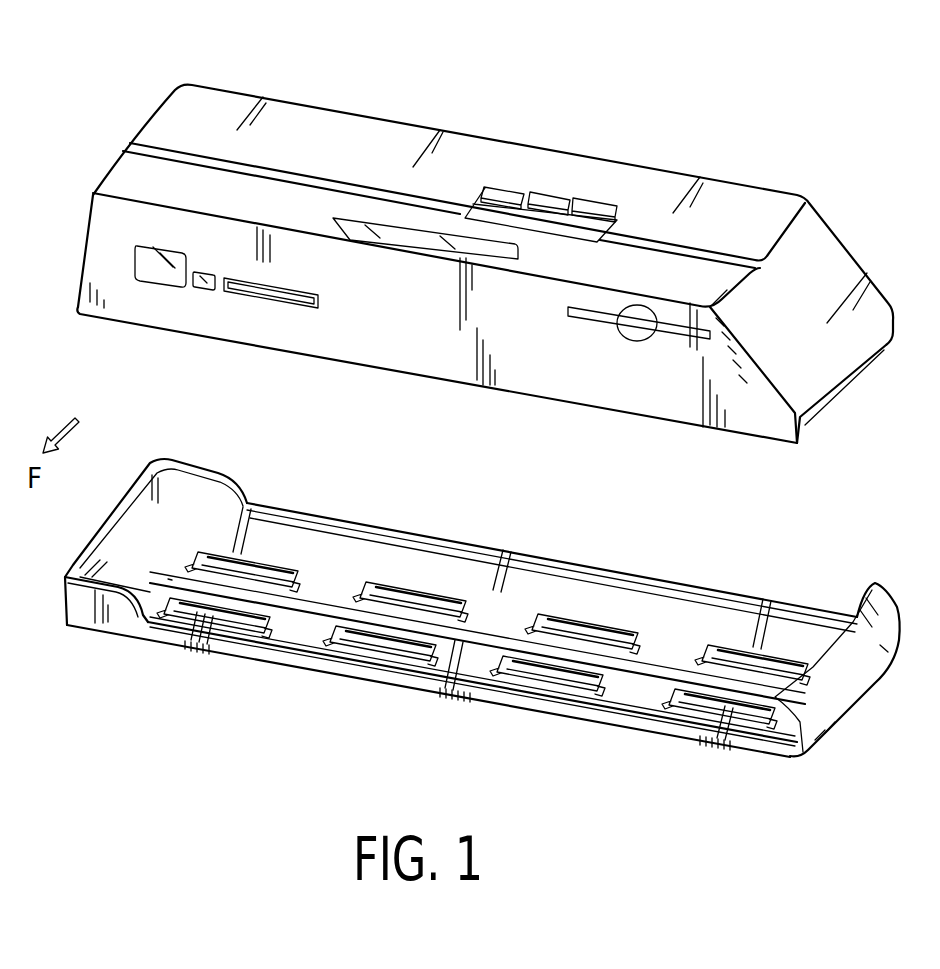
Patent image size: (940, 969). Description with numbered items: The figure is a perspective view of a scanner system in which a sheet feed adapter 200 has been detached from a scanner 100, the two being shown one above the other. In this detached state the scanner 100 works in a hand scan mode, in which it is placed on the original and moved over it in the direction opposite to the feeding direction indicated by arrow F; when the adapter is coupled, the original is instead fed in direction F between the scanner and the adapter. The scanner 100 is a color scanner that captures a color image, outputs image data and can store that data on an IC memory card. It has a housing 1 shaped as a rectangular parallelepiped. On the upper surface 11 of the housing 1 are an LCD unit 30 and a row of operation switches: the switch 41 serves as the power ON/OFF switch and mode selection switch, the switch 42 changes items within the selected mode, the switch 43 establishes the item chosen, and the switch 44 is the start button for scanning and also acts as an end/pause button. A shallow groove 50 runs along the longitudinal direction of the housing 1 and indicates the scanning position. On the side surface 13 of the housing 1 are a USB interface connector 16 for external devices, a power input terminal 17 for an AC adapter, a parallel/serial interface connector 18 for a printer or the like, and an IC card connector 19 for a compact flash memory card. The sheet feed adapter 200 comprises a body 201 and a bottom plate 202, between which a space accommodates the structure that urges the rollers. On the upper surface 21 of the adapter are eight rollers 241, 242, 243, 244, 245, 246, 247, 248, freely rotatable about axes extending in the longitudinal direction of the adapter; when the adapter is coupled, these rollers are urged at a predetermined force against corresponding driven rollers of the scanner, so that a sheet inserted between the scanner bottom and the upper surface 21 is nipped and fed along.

The housing 1 is at (276, 99).
The scanner 100 is at (459, 100).
The upper surface 11 is at (375, 133).
The side surface 13 is at (460, 363).
The USB interface connector 16 is at (150, 265).
The power input terminal 17 is at (198, 280).
The parallel/serial interface connector 18 is at (263, 295).
The IC card connector 19 is at (663, 334).
The LCD unit 30 is at (640, 232).
The switch 41 is at (603, 206).
The switch 42 is at (556, 197).
The switch 43 is at (503, 190).
The switch 44 is at (440, 243).
The shallow groove 50 is at (718, 250).
The sheet feed adapter 200 is at (274, 689).
The body 201 is at (457, 695).
The bottom plate 202 is at (533, 580).
The upper surface 21 is at (643, 692).
The roller 241 is at (262, 563).
The roller 242 is at (423, 590).
The roller 243 is at (593, 623).
The roller 244 is at (763, 647).
The roller 245 is at (223, 612).
The roller 246 is at (393, 642).
The roller 247 is at (567, 678).
The roller 248 is at (727, 712).